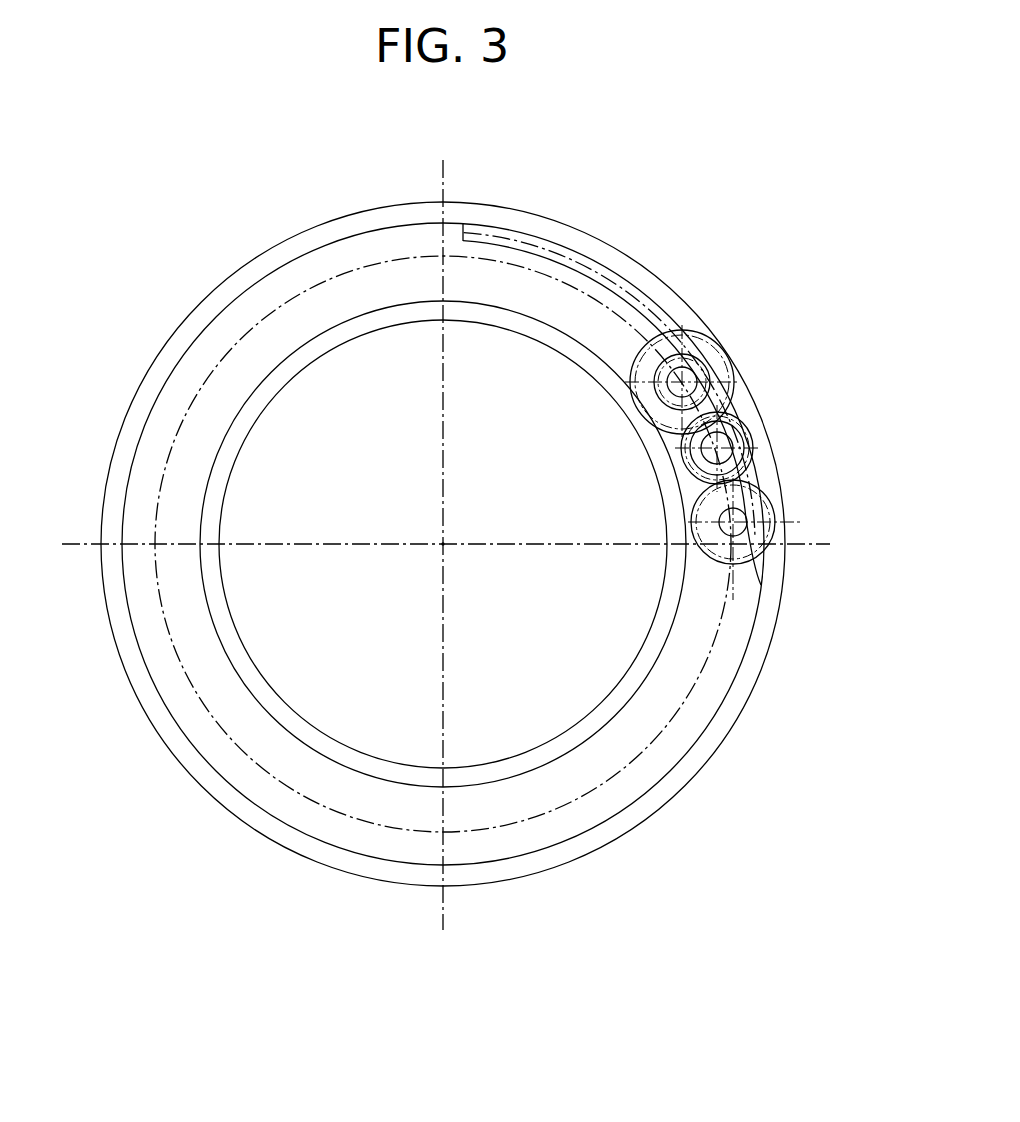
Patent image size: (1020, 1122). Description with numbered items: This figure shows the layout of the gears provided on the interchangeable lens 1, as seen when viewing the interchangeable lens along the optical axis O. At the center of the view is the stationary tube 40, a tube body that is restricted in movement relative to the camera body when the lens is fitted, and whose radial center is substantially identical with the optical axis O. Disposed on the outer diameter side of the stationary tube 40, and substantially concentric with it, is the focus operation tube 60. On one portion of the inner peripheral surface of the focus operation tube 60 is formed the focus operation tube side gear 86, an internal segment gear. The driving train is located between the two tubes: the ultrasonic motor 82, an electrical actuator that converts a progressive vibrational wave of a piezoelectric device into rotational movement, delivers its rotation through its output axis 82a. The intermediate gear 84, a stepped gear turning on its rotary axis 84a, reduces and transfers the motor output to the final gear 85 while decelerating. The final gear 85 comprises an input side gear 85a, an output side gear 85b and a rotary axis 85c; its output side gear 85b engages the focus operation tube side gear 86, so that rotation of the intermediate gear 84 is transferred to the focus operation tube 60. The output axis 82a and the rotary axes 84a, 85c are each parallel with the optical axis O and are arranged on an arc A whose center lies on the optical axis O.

The interchangeable lens 1 is at (195, 235).
The stationary tube 40 is at (390, 773).
The focus operation tube 60 is at (323, 238).
The ultrasonic motor 82 is at (772, 548).
The output axis 82a is at (747, 523).
The intermediate gear 84 is at (750, 430).
The rotary axis 84a is at (735, 450).
The final gear 85 is at (757, 334).
The input side gear 85a is at (690, 332).
The output side gear 85b is at (703, 361).
The rotary axis 85c is at (755, 370).
The focus operation tube side gear 86 is at (498, 232).
The optical axis O is at (440, 548).
The arc A is at (715, 648).